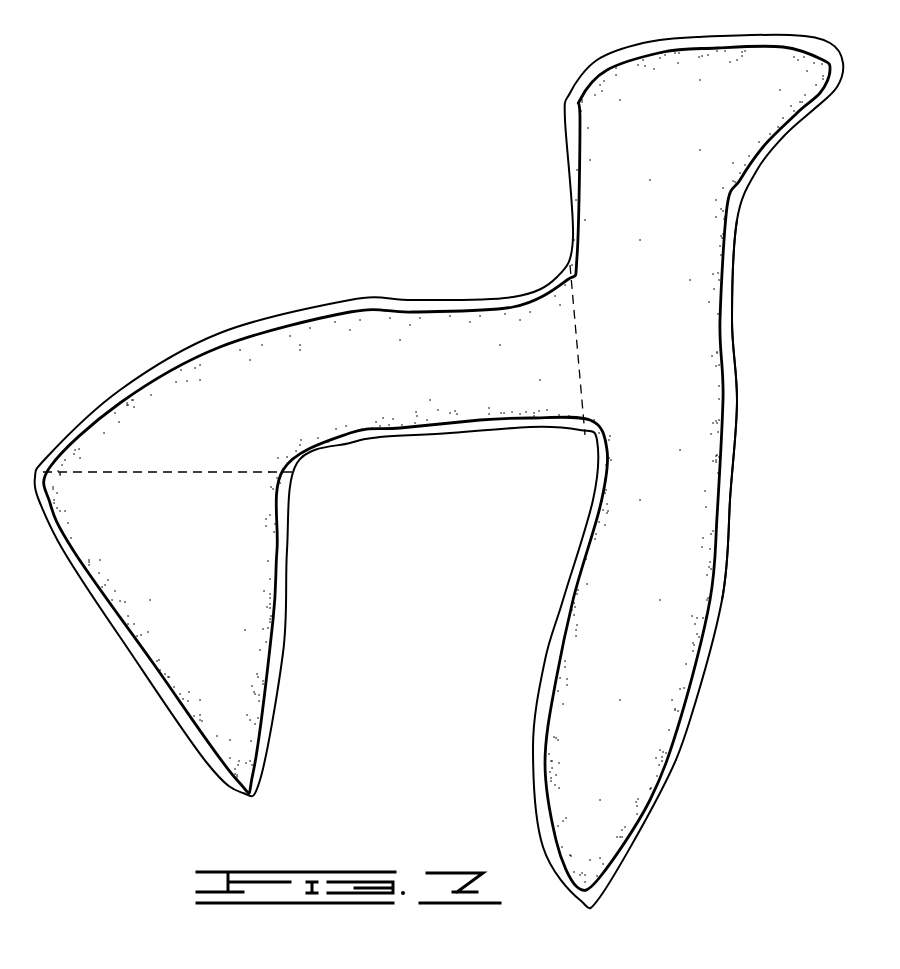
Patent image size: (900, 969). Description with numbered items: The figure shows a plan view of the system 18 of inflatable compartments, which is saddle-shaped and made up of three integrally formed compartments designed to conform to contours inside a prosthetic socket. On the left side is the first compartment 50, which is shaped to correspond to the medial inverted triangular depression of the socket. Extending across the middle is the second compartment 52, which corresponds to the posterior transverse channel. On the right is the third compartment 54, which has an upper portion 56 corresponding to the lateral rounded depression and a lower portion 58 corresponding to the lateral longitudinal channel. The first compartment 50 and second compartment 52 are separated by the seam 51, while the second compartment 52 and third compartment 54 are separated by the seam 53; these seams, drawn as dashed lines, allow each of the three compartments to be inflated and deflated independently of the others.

The system 18 is at (458, 171).
The first compartment 50 is at (225, 617).
The seam 51 is at (145, 472).
The second compartment 52 is at (382, 333).
The seam 53 is at (588, 318).
The third compartment 54 is at (736, 322).
The upper portion 56 is at (727, 130).
The lower portion 58 is at (660, 635).